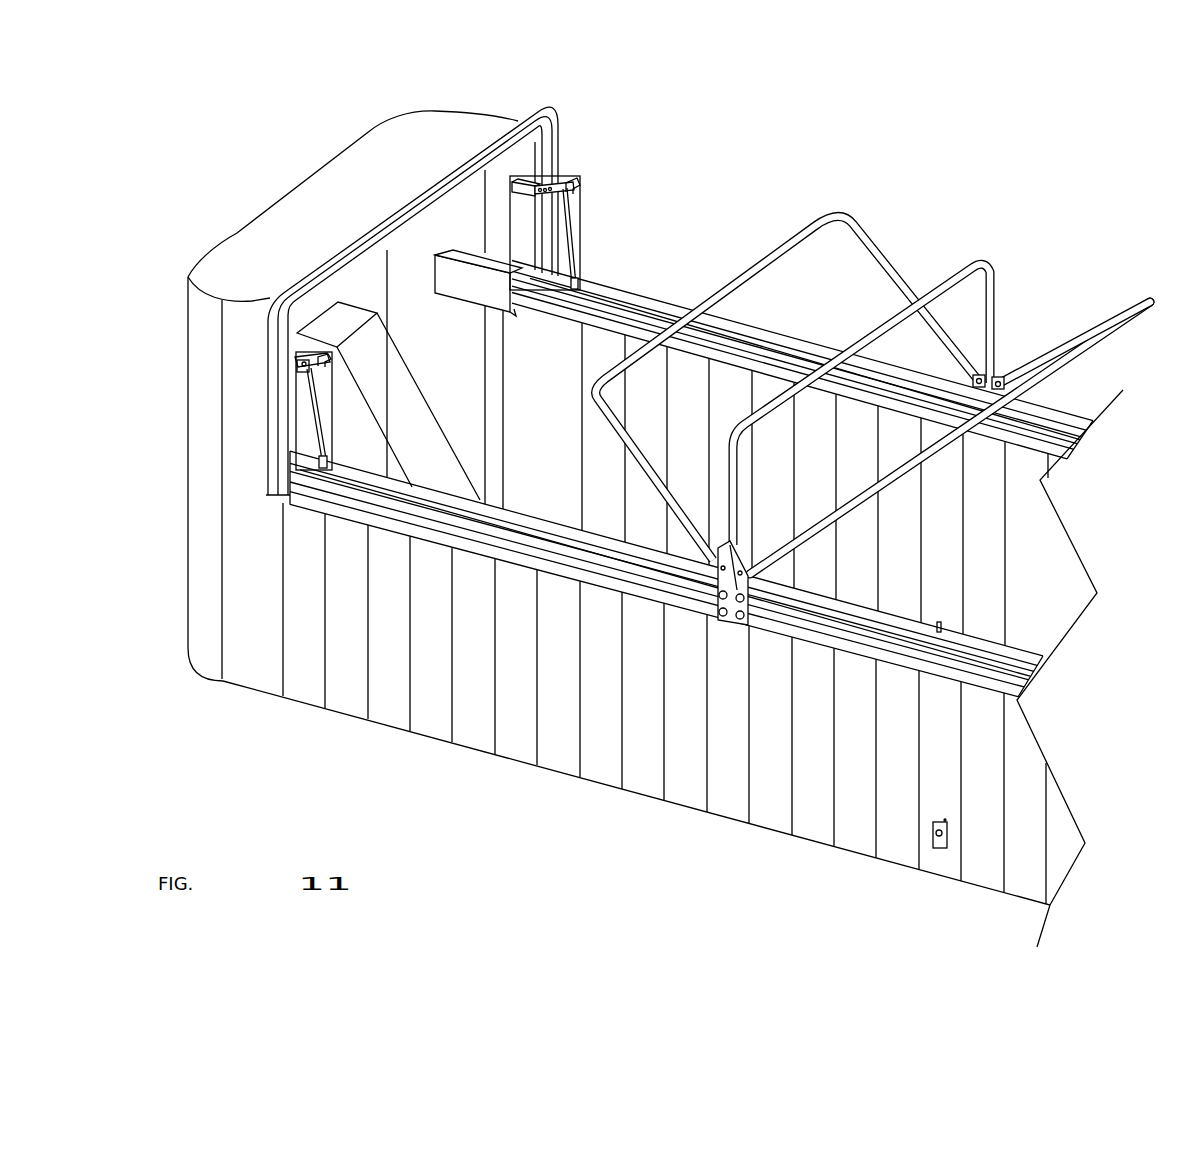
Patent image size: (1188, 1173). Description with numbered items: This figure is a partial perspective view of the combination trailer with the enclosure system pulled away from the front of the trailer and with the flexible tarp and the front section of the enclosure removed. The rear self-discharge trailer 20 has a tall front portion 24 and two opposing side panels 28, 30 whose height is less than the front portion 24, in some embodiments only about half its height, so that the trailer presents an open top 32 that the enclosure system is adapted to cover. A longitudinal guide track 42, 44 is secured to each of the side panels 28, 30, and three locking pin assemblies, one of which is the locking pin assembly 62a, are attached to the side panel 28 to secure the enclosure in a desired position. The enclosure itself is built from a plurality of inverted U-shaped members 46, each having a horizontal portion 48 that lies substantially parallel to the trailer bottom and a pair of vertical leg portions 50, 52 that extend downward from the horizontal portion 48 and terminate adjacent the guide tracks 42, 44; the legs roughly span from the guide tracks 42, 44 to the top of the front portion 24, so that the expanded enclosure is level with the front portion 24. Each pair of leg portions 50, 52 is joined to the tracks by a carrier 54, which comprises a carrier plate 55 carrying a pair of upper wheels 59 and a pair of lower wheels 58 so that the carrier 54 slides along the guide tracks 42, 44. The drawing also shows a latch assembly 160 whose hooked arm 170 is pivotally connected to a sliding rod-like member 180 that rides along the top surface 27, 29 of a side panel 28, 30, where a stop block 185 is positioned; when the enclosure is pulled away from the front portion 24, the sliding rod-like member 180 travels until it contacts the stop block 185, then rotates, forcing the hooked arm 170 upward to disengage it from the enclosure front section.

The rear self-discharge trailer 20 is at (1027, 823).
The front portion 24 is at (250, 323).
The top surface 27 is at (460, 497).
The side panel 28 is at (437, 647).
The top surface 29 is at (643, 307).
The side panel 30 is at (730, 390).
The open top 32 is at (701, 210).
The longitudinal guide track 42 is at (400, 510).
The longitudinal guide track 44 is at (810, 343).
The inverted U-shaped member 46 is at (790, 228).
The horizontal portion 48 is at (757, 260).
The vertical leg portion 50 is at (706, 585).
The vertical leg portion 52 is at (903, 267).
The carrier 54 is at (715, 560).
The carrier plate 55 is at (751, 602).
The lower wheels 58 is at (718, 622).
The upper wheels 59 is at (710, 580).
The locking pin assembly 62a is at (937, 848).
The latch assembly 160 is at (300, 348).
The hooked arm 170 is at (333, 360).
The sliding rod-like member 180 is at (300, 440).
The stop block 185 is at (320, 453).